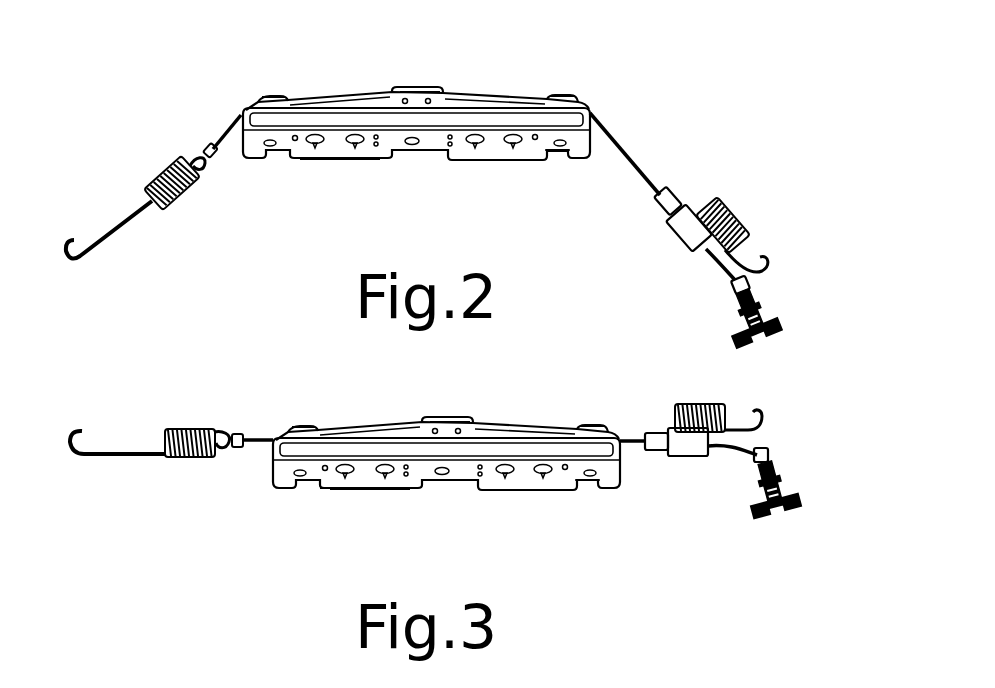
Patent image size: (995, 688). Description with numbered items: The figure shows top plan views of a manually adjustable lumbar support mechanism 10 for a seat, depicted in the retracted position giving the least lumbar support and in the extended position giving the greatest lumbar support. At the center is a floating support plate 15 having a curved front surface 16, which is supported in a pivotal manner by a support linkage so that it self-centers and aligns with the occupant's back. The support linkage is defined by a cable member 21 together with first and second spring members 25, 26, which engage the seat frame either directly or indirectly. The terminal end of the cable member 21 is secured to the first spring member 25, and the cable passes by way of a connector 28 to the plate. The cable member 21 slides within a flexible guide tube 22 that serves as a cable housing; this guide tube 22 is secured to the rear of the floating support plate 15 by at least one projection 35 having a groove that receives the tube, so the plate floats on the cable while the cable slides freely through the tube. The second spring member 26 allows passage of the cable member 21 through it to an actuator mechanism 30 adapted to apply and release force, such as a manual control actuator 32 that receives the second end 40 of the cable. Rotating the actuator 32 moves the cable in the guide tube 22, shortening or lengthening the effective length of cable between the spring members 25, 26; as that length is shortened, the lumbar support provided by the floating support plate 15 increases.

In FIG. 2, the spring strap assembly 10 is at (285, 72).
In FIG. 2, the floating support plate 15 is at (462, 164).
In FIG. 3, the floating support plate 15 is at (460, 492).
In FIG. 2, the curved front surface 16 is at (545, 160).
In FIG. 3, the curved front surface 16 is at (368, 490).
In FIG. 2, the cable member 21 is at (227, 142).
In FIG. 3, the cable member 21 is at (260, 445).
In FIG. 2, the flexible guide tube 22 is at (480, 102).
In FIG. 3, the flexible guide tube 22 is at (503, 423).
In FIG. 2, the first spring member 25 is at (142, 212).
In FIG. 3, the first spring member 25 is at (183, 423).
In FIG. 2, the second spring member 26 is at (730, 203).
In FIG. 3, the second spring member 26 is at (767, 414).
In FIG. 2, the cable connector 28 is at (207, 146).
In FIG. 3, the cable connector 28 is at (240, 432).
In FIG. 2, the actuator mechanism 30 is at (787, 300).
In FIG. 3, the actuator mechanism 30 is at (822, 507).
In FIG. 2, the manual control actuator 32 is at (762, 348).
In FIG. 3, the manual control actuator 32 is at (783, 527).
In FIG. 2, the projection 35 is at (412, 97).
In FIG. 3, the projection 35 is at (450, 423).
In FIG. 2, the second end 40 is at (732, 280).
In FIG. 3, the second end 40 is at (757, 457).